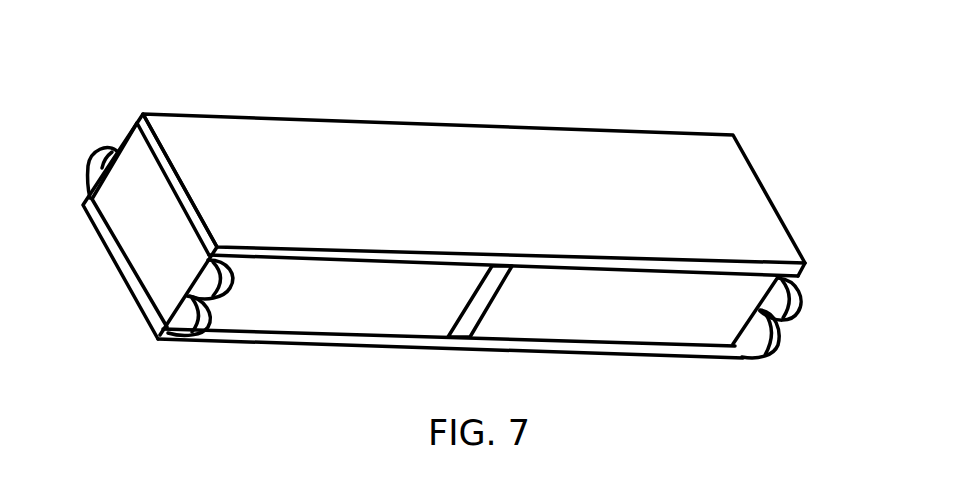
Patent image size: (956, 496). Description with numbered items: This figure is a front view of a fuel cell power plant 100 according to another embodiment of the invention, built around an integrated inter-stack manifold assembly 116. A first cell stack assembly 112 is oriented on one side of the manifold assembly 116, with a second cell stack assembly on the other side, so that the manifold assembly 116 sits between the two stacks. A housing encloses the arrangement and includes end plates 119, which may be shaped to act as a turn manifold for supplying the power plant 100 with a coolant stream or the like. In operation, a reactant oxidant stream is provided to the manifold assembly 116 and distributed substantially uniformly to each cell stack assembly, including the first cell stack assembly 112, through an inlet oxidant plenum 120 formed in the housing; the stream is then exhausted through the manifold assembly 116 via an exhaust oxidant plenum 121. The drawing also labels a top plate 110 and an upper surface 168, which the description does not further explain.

The fuel cell power plant 100 is at (453, 221).
The top surface 168 is at (463, 158).
The top plate 110 is at (347, 252).
The first cell stack assembly 112 is at (378, 308).
The manifold assembly 116 is at (493, 312).
The end plates 119 is at (118, 146).
The inlet oxidant plenum 120 is at (669, 263).
The exhaust oxidant plenum 121 is at (277, 340).